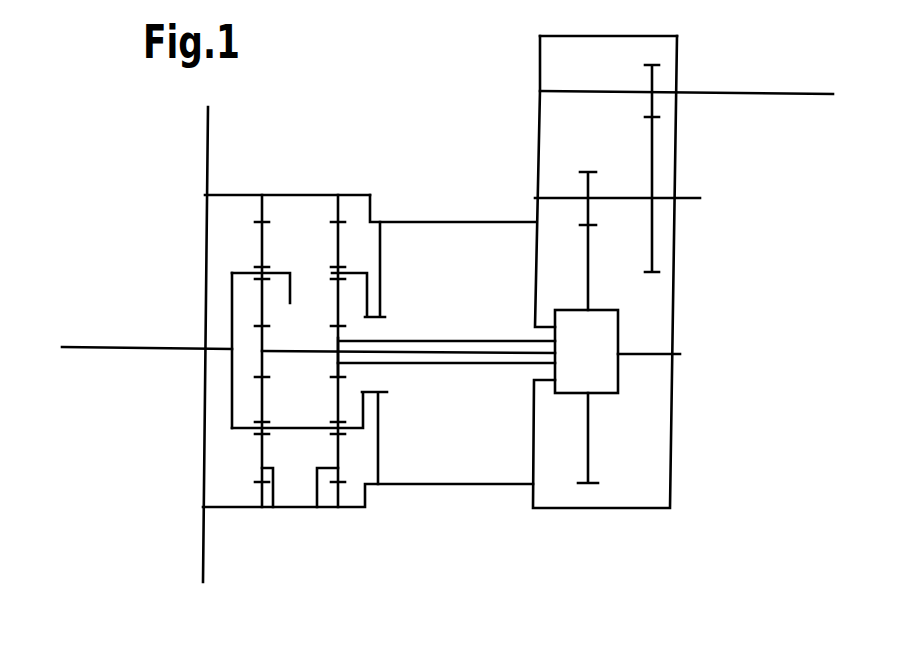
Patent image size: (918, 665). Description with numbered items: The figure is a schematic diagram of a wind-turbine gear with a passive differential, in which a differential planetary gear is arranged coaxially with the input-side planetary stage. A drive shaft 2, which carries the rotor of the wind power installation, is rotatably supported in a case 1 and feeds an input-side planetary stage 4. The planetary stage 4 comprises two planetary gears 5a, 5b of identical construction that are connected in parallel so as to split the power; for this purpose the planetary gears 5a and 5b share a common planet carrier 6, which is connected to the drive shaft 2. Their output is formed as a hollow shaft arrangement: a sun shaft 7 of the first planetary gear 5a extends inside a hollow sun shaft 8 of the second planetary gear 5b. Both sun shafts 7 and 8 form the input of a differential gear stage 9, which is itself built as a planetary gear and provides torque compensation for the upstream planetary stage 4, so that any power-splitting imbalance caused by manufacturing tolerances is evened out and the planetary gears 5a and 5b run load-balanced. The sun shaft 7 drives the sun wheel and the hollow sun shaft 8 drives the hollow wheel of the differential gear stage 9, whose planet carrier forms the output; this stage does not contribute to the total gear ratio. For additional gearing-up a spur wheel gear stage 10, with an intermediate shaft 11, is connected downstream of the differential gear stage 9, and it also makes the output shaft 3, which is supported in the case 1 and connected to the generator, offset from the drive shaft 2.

The case 1 is at (403, 220).
The drive shaft 2 is at (92, 347).
The output shaft 3 is at (768, 91).
The planetary stage 4 is at (303, 194).
The first planetary gear 5a is at (272, 507).
The second planetary gear 5b is at (315, 507).
The planet carrier 6 is at (290, 303).
The sun shaft 7 is at (395, 353).
The hollow sun shaft 8 is at (463, 363).
The differential gear stage 9 is at (580, 513).
The spur wheel gear stage 10 is at (654, 36).
The intermediate shaft 11 is at (700, 198).